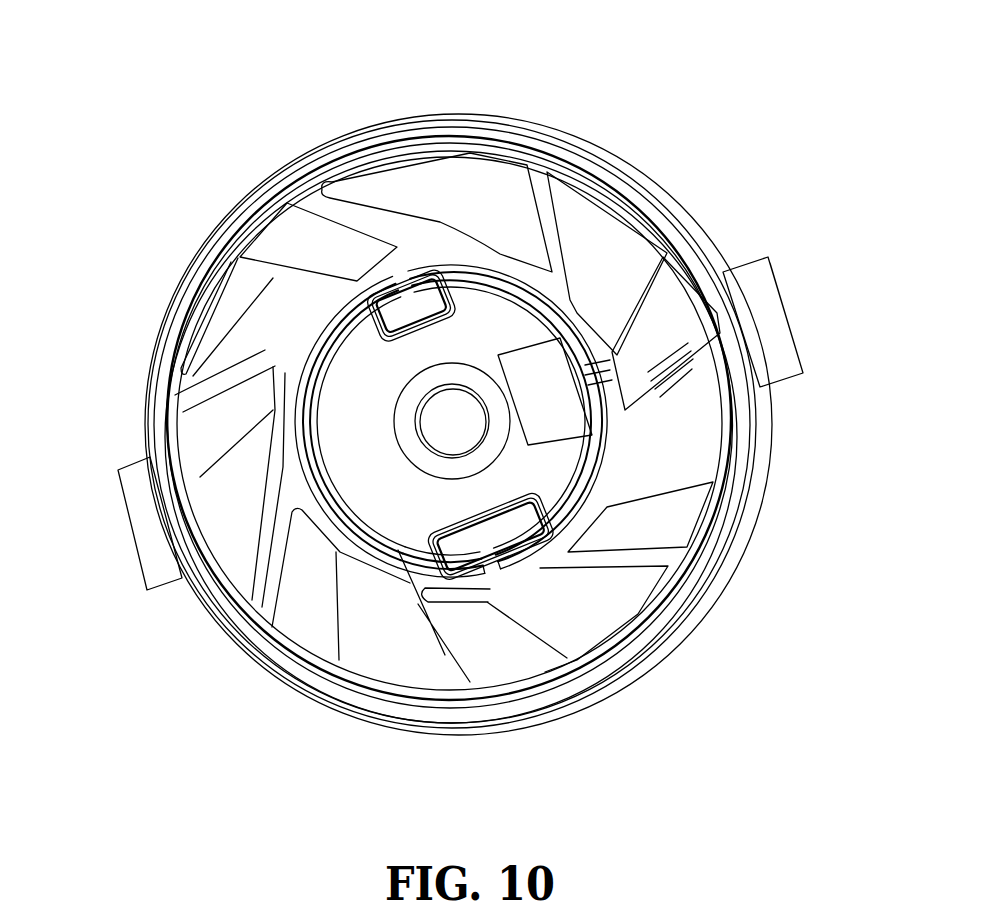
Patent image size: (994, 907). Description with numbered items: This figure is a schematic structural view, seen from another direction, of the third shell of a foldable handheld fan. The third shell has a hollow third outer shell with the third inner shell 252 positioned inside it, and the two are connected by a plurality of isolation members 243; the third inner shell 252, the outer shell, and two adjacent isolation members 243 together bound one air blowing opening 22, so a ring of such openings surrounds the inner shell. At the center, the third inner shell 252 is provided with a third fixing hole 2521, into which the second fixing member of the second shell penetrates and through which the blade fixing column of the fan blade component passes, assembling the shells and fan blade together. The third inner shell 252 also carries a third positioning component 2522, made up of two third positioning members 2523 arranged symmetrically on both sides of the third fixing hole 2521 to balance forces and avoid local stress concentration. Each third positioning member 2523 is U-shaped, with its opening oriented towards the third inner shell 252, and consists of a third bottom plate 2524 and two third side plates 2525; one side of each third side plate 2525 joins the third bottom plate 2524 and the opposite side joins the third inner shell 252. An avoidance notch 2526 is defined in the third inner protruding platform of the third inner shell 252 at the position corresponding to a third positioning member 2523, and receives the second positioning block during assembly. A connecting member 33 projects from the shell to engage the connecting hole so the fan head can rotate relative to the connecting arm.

The air blowing opening 22 is at (578, 237).
The connecting member 33 is at (762, 360).
The isolation member 243 is at (212, 420).
The third inner shell 252 is at (440, 268).
The third fixing hole 2521 is at (437, 433).
The third positioning component 2522 is at (400, 273).
The third positioning member 2523 is at (332, 637).
The third bottom plate 2524 is at (428, 572).
The third side plate 2525 is at (425, 540).
The avoidance notch 2526 is at (493, 569).